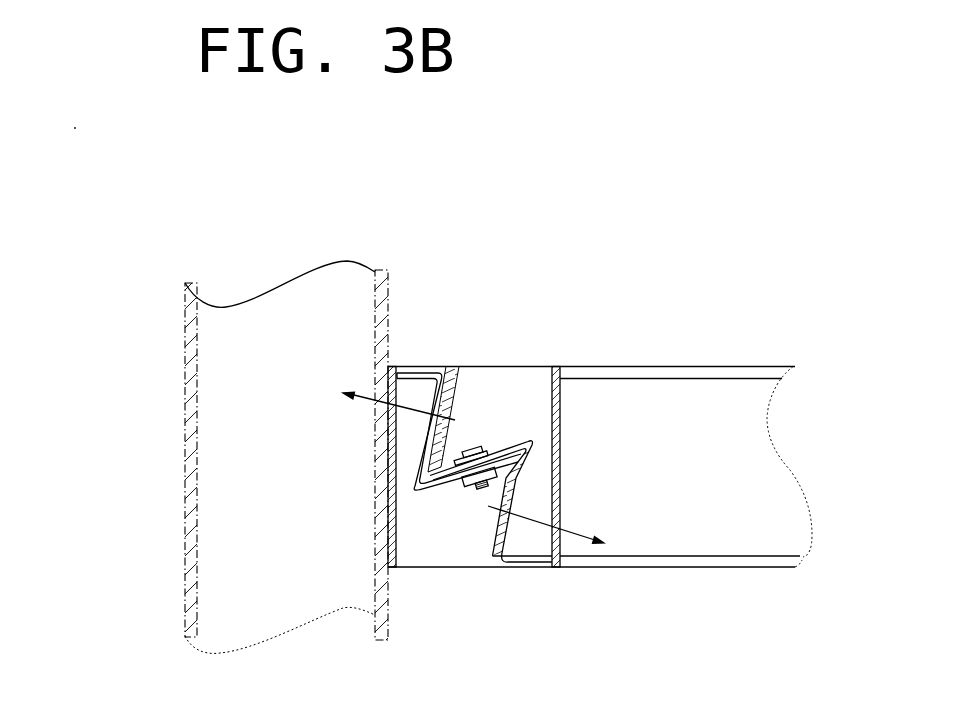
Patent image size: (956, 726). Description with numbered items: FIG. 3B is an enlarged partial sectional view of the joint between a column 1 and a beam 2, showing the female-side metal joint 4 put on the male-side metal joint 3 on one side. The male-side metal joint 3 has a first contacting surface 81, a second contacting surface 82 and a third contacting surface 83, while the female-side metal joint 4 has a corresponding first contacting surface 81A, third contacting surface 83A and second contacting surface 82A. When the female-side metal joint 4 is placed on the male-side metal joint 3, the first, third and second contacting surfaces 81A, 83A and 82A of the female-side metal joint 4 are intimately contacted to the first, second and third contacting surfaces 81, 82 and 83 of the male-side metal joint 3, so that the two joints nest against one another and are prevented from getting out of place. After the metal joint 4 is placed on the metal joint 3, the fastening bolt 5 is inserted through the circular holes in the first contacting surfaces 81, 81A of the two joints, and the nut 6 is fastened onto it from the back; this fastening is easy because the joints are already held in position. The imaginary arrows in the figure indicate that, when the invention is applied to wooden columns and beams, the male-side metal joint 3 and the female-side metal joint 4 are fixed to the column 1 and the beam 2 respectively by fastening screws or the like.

The wall panel 1 is at (180, 390).
The beam 2 is at (738, 370).
The male-side metal joint 3 is at (497, 592).
The female-side metal joint 4 is at (541, 342).
The fastening bolt 5 is at (477, 447).
The nut 6 is at (467, 488).
The first contacting surface 81 is at (507, 437).
The first contacting surface 81A is at (490, 505).
The second contacting surface 82 is at (434, 388).
The second contacting surface 82A is at (485, 538).
The third contacting surface 83 is at (520, 498).
The third contacting surface 83A is at (462, 378).